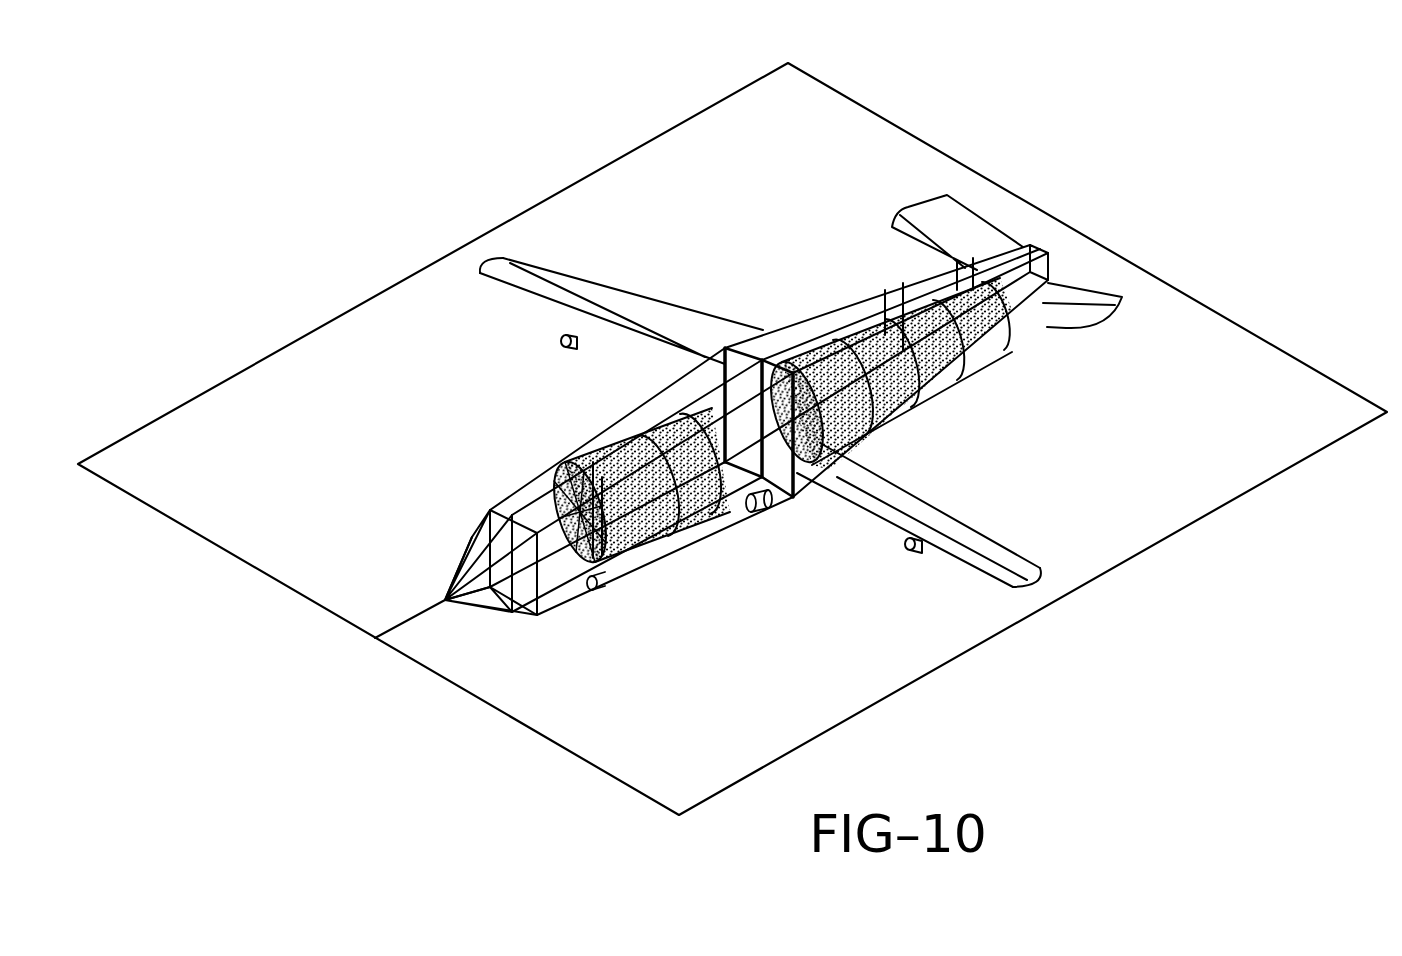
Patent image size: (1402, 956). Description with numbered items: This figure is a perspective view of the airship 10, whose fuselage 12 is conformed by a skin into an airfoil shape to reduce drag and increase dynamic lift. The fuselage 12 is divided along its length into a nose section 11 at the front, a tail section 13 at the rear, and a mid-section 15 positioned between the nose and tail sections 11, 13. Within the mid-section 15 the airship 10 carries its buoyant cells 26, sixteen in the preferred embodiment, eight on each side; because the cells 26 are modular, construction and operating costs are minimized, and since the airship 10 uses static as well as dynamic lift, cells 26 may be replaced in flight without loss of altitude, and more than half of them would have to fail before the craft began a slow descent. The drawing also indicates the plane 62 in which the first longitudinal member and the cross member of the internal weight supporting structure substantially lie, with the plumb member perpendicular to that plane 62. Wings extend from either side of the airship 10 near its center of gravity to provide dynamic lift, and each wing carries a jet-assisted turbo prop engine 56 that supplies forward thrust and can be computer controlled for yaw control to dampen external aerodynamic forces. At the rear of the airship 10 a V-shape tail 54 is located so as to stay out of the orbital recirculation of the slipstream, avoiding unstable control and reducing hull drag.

The airship 10 is at (672, 157).
The nose section 11 is at (458, 530).
The fuselage 12 is at (546, 250).
The tail section 13 is at (1105, 327).
The mid-section 15 is at (815, 542).
The cells 26 is at (838, 355).
The V-shape tail 54 is at (907, 212).
The jet-assisted turbo prop engine 56 is at (757, 512).
The plane 62 is at (965, 653).